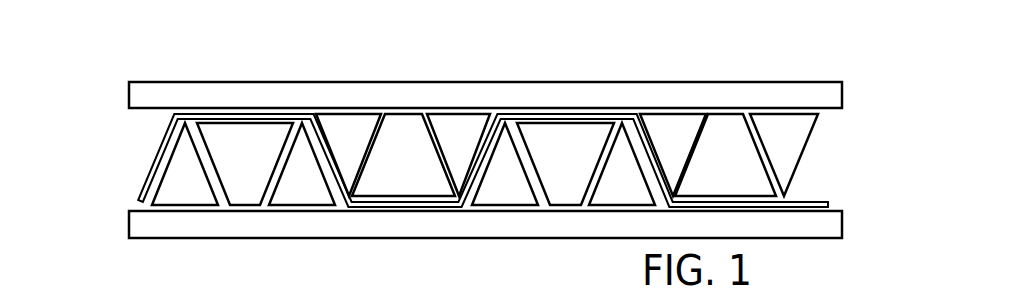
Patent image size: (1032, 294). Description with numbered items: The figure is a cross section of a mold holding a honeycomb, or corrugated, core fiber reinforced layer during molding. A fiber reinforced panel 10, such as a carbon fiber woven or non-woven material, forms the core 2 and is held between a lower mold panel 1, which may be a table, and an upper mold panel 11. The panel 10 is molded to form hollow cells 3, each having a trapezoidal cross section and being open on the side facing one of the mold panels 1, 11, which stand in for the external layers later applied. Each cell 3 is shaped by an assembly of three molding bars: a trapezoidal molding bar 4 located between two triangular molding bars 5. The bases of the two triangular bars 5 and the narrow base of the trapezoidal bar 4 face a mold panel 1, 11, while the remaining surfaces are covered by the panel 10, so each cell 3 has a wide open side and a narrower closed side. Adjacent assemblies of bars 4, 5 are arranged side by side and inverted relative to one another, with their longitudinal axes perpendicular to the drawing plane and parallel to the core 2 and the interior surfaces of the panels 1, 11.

The lower mold panel 1 is at (818, 223).
The upper mold panel 11 is at (813, 93).
The core 2 is at (845, 114).
The hollow cell 3 is at (206, 157).
The trapezoidal molding bar 4 is at (401, 135).
The triangular molding bar 5 is at (344, 137).
The fiber reinforced panel 10 is at (430, 121).